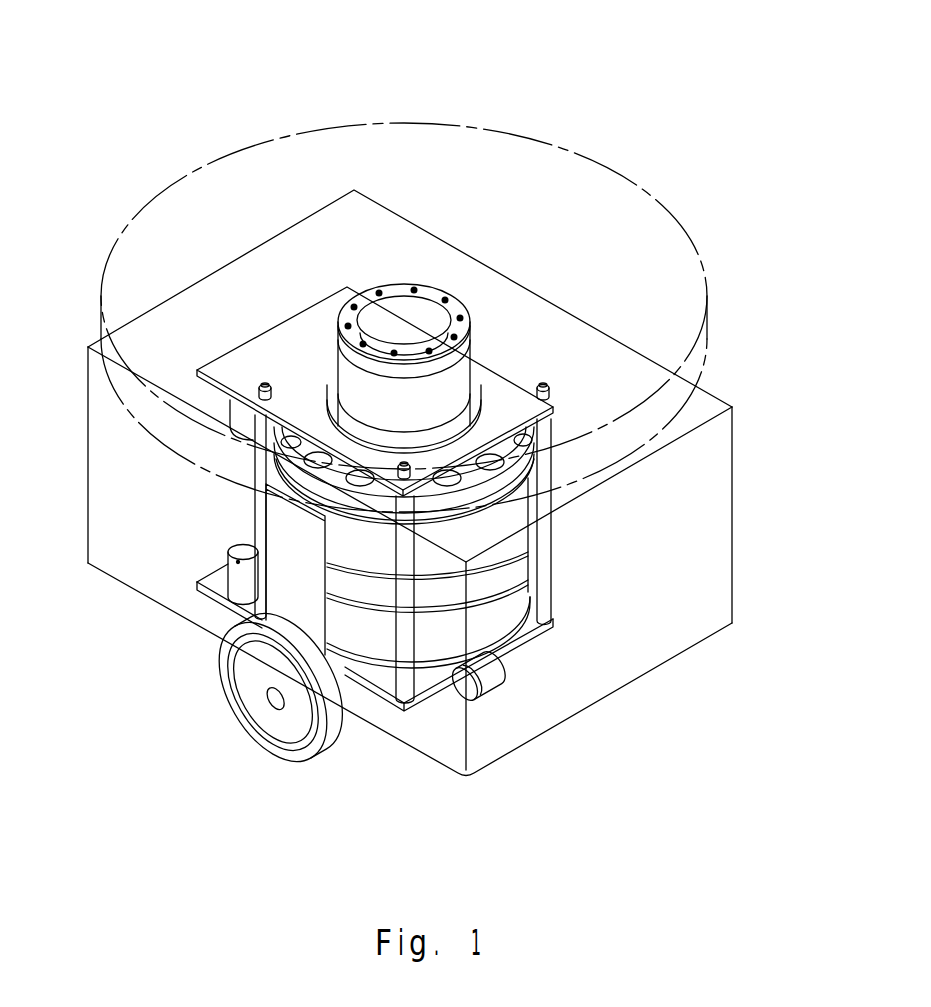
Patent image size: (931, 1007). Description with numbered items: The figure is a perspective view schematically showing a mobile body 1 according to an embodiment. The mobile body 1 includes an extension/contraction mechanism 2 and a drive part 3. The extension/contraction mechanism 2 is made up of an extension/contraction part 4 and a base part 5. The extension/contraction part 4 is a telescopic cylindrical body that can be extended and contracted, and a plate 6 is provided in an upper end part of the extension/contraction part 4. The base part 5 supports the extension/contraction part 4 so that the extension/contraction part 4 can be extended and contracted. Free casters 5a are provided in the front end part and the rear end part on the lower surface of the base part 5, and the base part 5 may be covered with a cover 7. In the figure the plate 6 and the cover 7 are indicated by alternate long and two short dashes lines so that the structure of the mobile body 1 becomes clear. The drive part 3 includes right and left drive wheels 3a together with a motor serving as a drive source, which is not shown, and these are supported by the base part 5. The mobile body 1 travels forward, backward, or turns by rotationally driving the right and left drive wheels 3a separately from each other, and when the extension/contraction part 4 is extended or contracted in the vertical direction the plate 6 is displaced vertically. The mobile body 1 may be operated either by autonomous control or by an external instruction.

The mobile body 1 is at (760, 44).
The extension/contraction mechanism 2 is at (408, 733).
The drive part 3 is at (254, 728).
The drive wheels 3a is at (291, 754).
The extension/contraction part 4 is at (431, 292).
The base part 5 is at (431, 672).
The free casters 5a is at (494, 683).
The plate 6 is at (633, 218).
The cover 7 is at (700, 497).